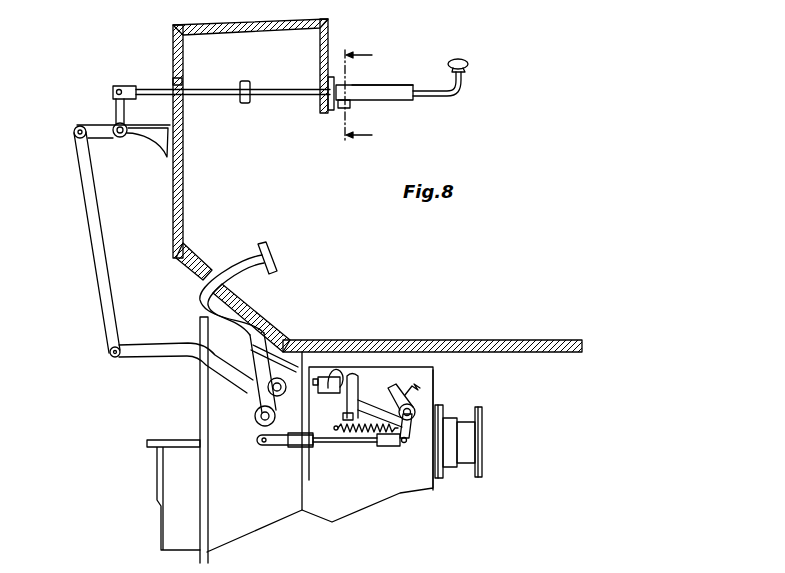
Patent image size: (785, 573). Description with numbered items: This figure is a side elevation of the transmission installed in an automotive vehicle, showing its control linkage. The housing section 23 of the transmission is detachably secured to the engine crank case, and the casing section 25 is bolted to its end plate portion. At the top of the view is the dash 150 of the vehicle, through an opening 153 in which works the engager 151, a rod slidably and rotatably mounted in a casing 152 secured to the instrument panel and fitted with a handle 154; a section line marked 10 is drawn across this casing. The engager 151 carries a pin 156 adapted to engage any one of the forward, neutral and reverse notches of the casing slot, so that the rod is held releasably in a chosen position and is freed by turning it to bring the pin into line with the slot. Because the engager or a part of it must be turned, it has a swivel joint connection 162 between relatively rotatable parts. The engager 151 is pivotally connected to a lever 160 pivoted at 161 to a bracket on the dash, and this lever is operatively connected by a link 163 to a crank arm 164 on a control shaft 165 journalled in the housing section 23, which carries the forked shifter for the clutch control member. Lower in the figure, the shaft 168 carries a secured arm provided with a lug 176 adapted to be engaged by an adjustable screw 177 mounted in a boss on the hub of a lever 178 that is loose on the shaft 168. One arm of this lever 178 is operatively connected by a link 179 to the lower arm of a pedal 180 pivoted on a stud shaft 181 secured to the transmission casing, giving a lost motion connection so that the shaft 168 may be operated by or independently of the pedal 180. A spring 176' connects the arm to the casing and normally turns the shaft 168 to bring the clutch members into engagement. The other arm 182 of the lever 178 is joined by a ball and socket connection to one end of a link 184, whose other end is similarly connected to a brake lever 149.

The section line 10 is at (356, 97).
The housing section 23 is at (242, 526).
The casing section 25 is at (371, 508).
The brake lever 149 is at (341, 366).
The dash 150 is at (330, 112).
The engager 151 is at (447, 98).
The casing 152 is at (389, 99).
The opening 153 is at (176, 80).
The handle 154 is at (466, 56).
The pin 156 is at (374, 83).
The lever 160 is at (108, 108).
The pivot 161 is at (120, 138).
The swivel joint connection 162 is at (248, 104).
The link 163 is at (97, 258).
The crank arm 164 is at (150, 355).
The control shaft 165 is at (282, 379).
The shaft 168 is at (414, 410).
The lug 176 is at (407, 376).
The spring 176' is at (333, 416).
The adjustable screw 177 is at (416, 386).
The lever 178 is at (422, 432).
The link 179 is at (337, 447).
The pedal 180 is at (240, 262).
The stud shaft 181 is at (260, 424).
The arm 182 is at (377, 426).
The link 184 is at (360, 378).